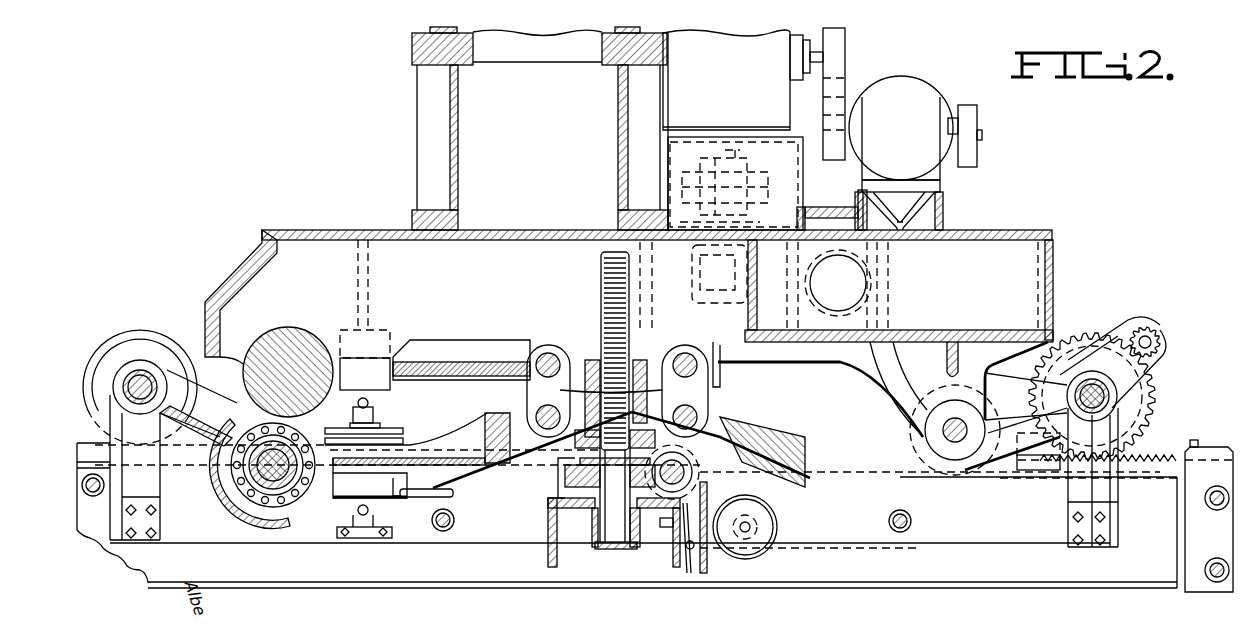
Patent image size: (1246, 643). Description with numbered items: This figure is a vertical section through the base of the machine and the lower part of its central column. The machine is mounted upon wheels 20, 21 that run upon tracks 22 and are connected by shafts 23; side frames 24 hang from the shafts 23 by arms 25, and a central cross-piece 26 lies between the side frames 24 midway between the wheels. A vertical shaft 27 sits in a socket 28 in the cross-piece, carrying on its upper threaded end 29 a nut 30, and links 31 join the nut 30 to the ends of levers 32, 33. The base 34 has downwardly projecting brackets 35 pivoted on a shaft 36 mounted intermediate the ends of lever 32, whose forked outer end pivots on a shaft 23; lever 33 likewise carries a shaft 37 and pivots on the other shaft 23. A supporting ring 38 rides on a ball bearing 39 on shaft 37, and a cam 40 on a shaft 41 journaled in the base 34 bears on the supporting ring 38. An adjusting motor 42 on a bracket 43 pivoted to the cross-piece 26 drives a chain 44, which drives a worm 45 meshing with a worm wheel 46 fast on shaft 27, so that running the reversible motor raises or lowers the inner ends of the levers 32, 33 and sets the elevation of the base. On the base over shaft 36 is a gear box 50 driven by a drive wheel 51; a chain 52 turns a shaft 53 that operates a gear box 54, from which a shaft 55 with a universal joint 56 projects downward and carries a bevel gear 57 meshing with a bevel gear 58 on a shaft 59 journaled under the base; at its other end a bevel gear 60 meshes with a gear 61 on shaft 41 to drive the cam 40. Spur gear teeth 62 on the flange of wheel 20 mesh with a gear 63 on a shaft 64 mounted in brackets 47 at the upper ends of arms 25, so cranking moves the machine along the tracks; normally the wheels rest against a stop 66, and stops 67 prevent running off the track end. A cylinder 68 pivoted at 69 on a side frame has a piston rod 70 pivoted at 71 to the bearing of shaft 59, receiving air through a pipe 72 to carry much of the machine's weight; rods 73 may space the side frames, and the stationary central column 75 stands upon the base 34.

The wheel 20 is at (1090, 338).
The wheel 21 is at (148, 341).
The track 22 is at (90, 446).
The shaft 23 is at (148, 380).
The side frame 24 is at (1000, 533).
The arm 25 is at (150, 484).
The central cross-piece 26 is at (548, 530).
The vertical shaft 27 is at (600, 550).
The socket 28 is at (622, 553).
The upper threaded end 29 is at (600, 283).
The nut 30 is at (590, 350).
The link 31 is at (705, 402).
The lever 32 is at (776, 432).
The lever 33 is at (470, 426).
The base 34 is at (1018, 232).
The bracket 35 is at (898, 386).
The shaft 36 is at (955, 442).
The shaft 37 is at (290, 516).
The supporting ring 38 is at (305, 525).
The ball bearing 39 is at (232, 508).
The cam 40 is at (270, 336).
The shaft 41 is at (312, 328).
The adjusting motor 42 is at (770, 546).
The bracket 43 is at (712, 576).
The chain 44 is at (768, 494).
The worm 45 is at (666, 388).
The worm wheel 46 is at (575, 478).
The bracket 47 is at (1130, 330).
The gear box 50 is at (912, 92).
The drive wheel 51 is at (968, 114).
The chain 52 is at (845, 88).
The shaft 53 is at (812, 57).
The gear box 54 is at (770, 108).
The shaft 55 is at (752, 150).
The universal joint 56 is at (762, 190).
The bevel gear 57 is at (740, 348).
The bevel gear 58 is at (722, 360).
The shaft 59 is at (456, 364).
The bevel gear 60 is at (349, 336).
The gear 61 is at (236, 404).
The spur gear teeth 62 is at (1116, 382).
The gear 63 is at (1160, 332).
The shaft 64 is at (1168, 340).
The stop 66 is at (1040, 468).
The stop 67 is at (1222, 454).
The cylinder 68 is at (397, 497).
The pivot 69 is at (362, 530).
The piston rod 70 is at (376, 414).
The pivot 71 is at (370, 402).
The pipe 72 is at (455, 492).
The rod 73 is at (898, 513).
The stationary central column 75 is at (458, 133).